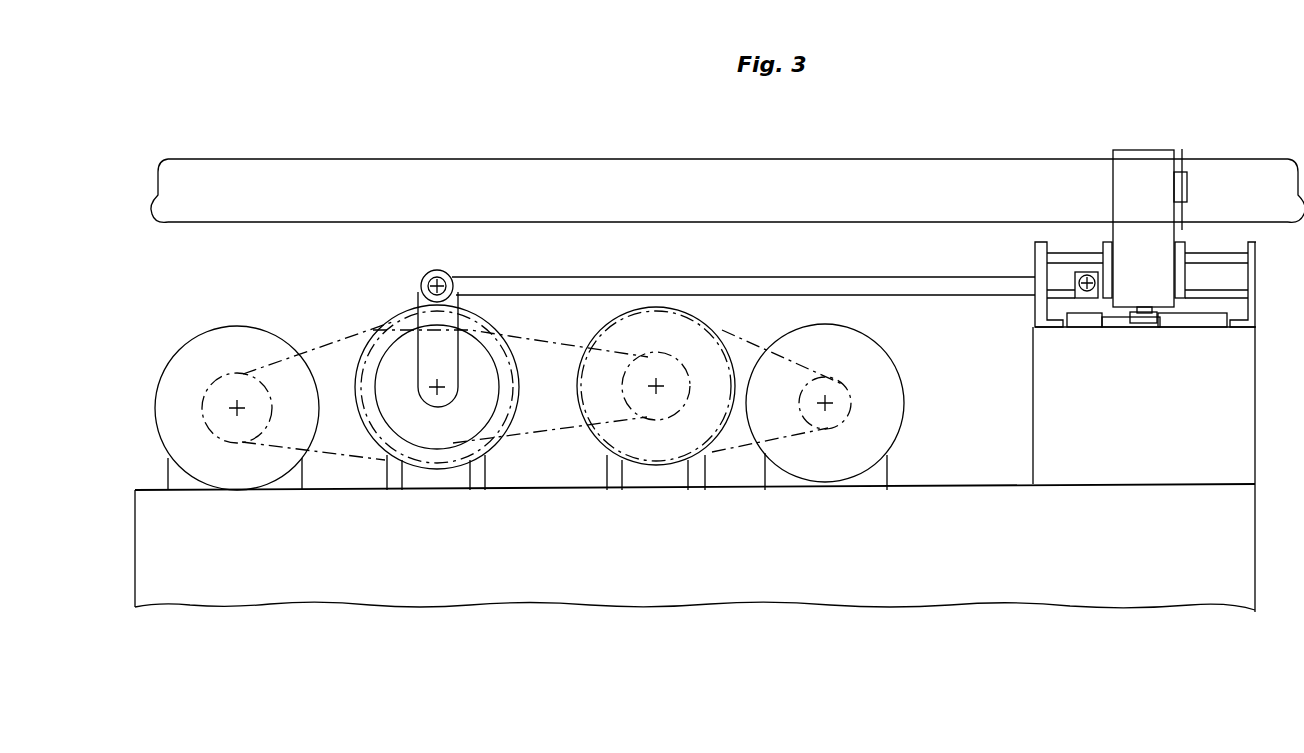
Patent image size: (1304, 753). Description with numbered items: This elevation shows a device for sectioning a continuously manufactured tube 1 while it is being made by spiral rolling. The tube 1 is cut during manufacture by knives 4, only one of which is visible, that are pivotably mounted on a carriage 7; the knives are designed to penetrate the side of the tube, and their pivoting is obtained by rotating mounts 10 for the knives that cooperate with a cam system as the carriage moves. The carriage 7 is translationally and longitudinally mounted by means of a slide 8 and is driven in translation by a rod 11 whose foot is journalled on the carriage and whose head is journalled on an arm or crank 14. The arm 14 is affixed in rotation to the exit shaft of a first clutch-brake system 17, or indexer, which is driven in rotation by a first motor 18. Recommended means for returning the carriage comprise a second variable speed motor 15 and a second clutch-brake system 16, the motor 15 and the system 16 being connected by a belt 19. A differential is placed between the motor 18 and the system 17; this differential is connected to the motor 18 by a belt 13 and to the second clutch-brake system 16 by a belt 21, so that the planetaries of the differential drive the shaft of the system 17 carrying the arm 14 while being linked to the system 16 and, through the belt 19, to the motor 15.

The tube 1 is at (888, 158).
The knives 4 is at (1183, 166).
The carriage 7 is at (1186, 289).
The slide 8 is at (1233, 273).
The rotating mounts 10 is at (1131, 166).
The rod 11 is at (660, 293).
The belt 13 is at (542, 351).
The arm or crank 14 is at (415, 292).
The second variable speed motor 15 is at (863, 330).
The second clutch-brake system 16 is at (700, 321).
The first clutch-brake system 17 is at (398, 329).
The first motor 18 is at (228, 328).
The belt 19 is at (760, 345).
The belt 21 is at (553, 332).